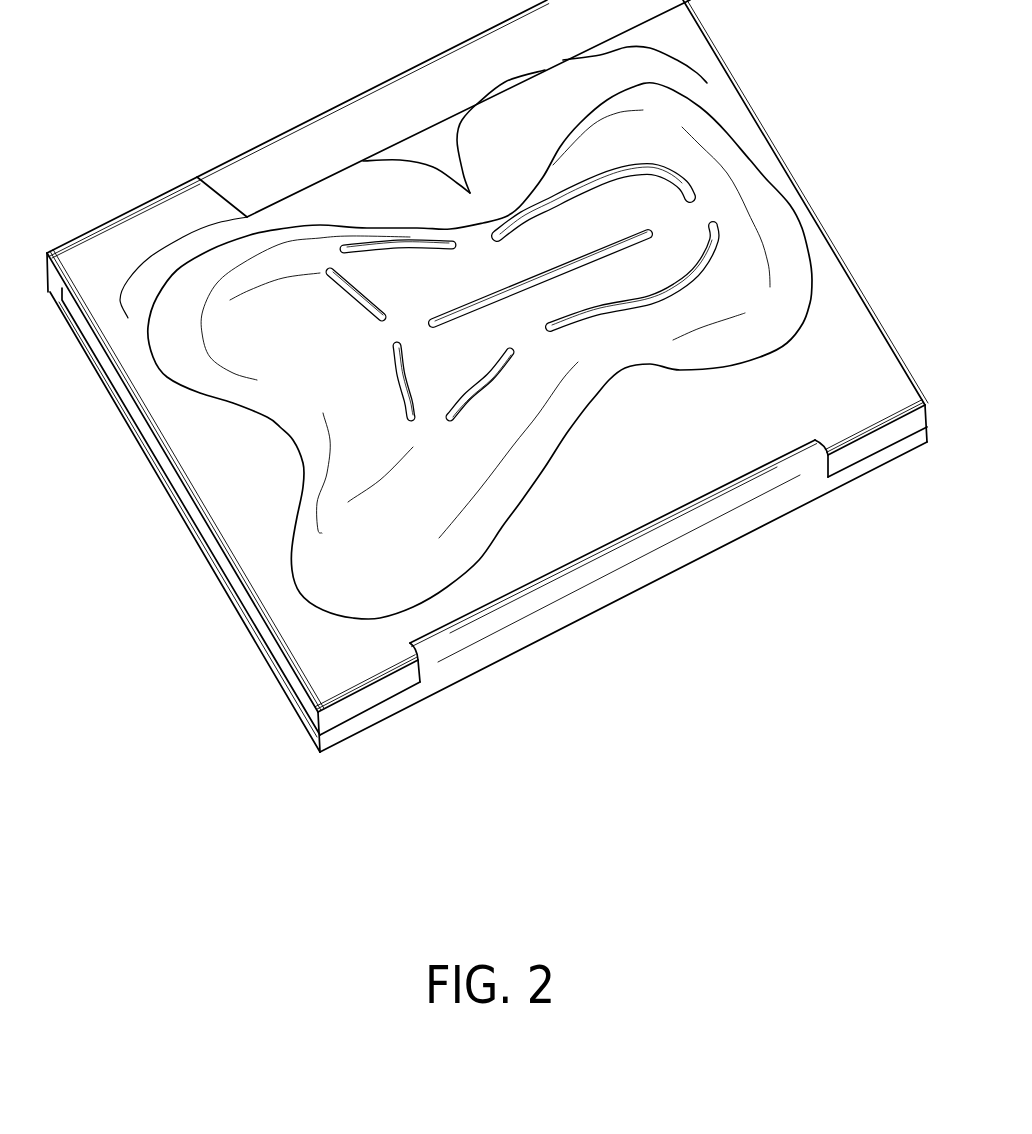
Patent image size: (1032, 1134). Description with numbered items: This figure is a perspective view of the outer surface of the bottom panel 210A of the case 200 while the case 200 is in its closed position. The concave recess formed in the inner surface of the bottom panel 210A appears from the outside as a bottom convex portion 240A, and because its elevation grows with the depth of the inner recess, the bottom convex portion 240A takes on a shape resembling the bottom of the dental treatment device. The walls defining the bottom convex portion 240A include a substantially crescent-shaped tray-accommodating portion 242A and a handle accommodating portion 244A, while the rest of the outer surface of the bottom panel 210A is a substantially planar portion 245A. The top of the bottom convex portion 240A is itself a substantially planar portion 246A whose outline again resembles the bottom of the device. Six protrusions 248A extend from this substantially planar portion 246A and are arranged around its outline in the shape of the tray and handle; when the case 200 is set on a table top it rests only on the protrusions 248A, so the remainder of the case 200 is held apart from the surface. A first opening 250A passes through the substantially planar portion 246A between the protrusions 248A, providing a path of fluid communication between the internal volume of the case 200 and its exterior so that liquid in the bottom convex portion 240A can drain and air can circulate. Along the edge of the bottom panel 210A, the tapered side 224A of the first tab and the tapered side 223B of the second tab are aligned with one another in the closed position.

The case 200 is at (57, 147).
The bottom panel 210A is at (694, 457).
The tapered side of second tab 223B is at (218, 197).
The tapered side of first tab 224A is at (236, 188).
The bottom convex portion 240A is at (400, 587).
The tray-accommodating portion 242A is at (335, 178).
The handle accommodating portion 244A is at (558, 65).
The substantially planar portion 245A is at (267, 498).
The substantially planar portion 246A is at (482, 291).
The protrusions 248A is at (675, 183).
The first opening 250A is at (692, 201).